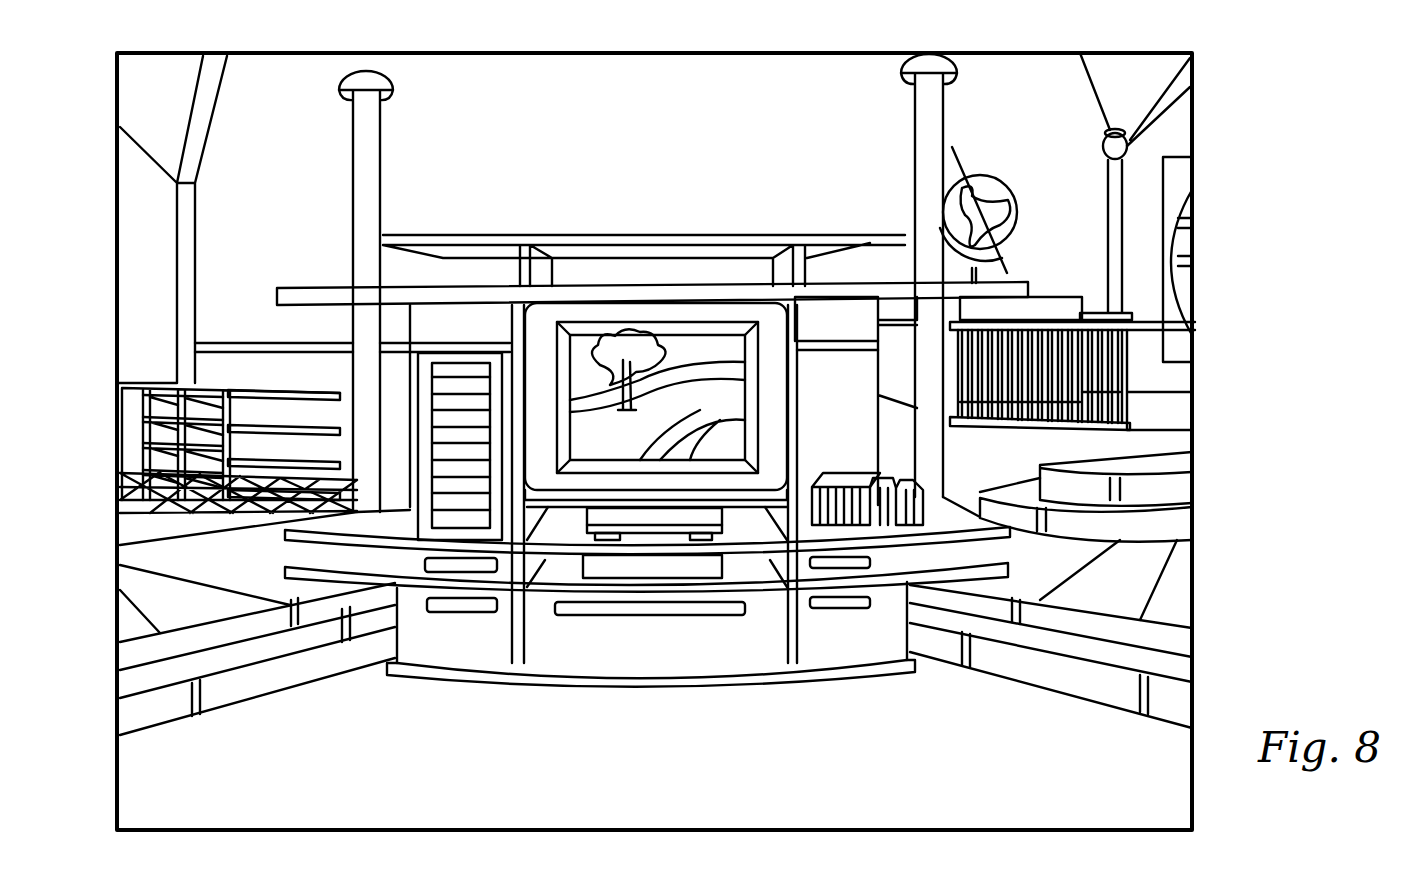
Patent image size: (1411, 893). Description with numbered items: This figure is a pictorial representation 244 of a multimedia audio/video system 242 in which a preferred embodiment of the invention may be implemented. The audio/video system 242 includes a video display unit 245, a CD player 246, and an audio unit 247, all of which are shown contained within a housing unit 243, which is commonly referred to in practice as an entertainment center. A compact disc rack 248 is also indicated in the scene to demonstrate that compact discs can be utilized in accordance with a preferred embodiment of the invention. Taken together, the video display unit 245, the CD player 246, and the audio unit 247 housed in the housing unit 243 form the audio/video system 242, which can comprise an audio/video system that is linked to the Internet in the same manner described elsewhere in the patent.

The multimedia audio/video system 242 is at (758, 72).
The housing unit 243 is at (550, 233).
The pictorial representation 244 is at (803, 830).
The video display unit 245 is at (630, 345).
The CD player 246 is at (733, 517).
The audio unit 247 is at (447, 417).
The compact disc rack 248 is at (876, 492).